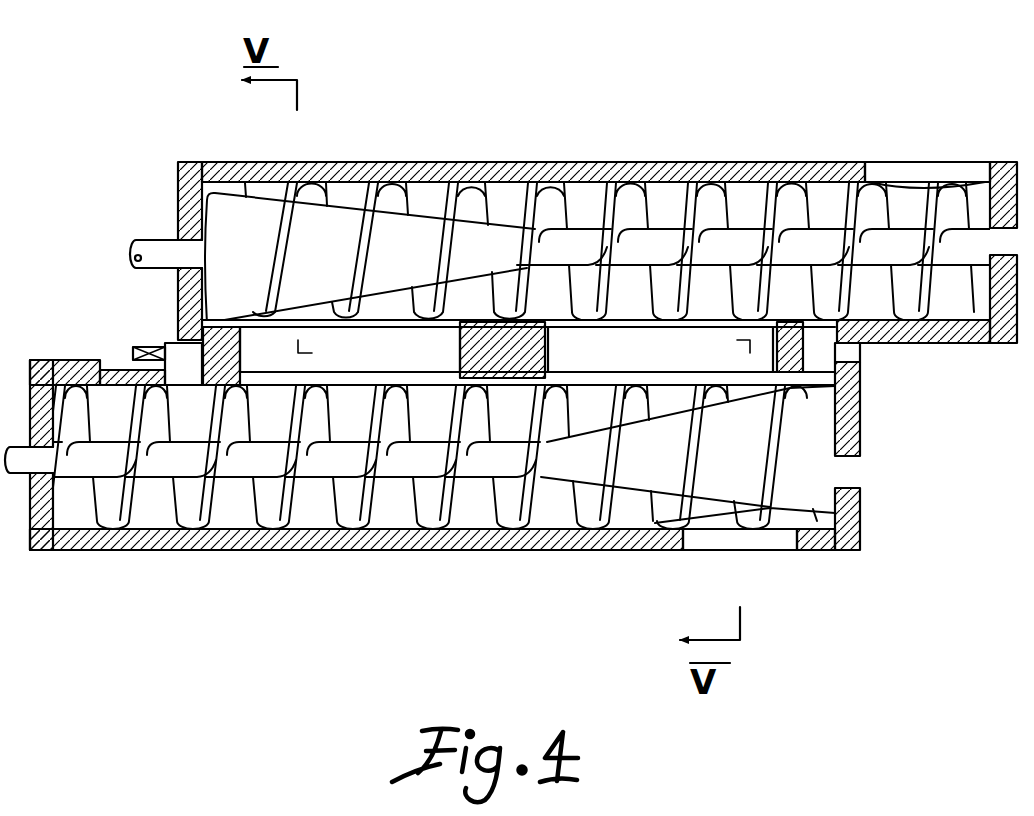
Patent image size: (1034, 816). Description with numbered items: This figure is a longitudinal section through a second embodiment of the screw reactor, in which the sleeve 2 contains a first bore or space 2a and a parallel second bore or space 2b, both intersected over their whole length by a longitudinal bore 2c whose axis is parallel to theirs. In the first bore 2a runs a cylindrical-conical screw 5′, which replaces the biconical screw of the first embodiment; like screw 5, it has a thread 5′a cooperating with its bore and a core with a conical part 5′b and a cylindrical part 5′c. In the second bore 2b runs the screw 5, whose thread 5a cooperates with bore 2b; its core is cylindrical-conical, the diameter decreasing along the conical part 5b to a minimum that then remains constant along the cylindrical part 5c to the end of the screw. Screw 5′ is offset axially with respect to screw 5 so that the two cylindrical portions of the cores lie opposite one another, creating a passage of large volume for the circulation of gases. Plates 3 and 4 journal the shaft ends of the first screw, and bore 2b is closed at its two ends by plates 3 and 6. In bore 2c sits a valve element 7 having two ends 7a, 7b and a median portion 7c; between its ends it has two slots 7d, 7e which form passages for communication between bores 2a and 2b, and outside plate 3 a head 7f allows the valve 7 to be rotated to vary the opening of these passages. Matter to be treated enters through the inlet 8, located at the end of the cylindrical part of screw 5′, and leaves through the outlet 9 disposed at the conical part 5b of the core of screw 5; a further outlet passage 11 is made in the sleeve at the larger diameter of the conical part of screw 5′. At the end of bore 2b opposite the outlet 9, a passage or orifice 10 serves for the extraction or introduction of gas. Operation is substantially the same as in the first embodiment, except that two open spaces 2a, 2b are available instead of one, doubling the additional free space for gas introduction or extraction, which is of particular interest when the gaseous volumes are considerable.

The sleeve 2 is at (297, 540).
The first bore 2a is at (312, 500).
The second bore 2b is at (658, 196).
The longitudinal bore 2c is at (440, 380).
The plate 3 is at (33, 552).
The plate 4 is at (857, 521).
The screw 5 is at (523, 195).
The thread 5a is at (557, 192).
The conical core part 5b is at (413, 222).
The cylindrical core part 5c is at (745, 194).
The cylindrical-conical screw 5′ is at (383, 483).
The screw shaft 5′a is at (200, 502).
The tapered screw core 5′b is at (568, 458).
The helical flight 5′c is at (482, 455).
The plate 6 is at (1005, 345).
The valve element 7 is at (147, 333).
The valve end 7a is at (200, 312).
The valve end 7b is at (862, 352).
The median portion 7c is at (555, 348).
The slot 7d is at (267, 353).
The slot 7e is at (753, 348).
The head 7f is at (133, 353).
The inlet 8 is at (82, 540).
The outlet 9 is at (322, 183).
The passage or orifice 10 is at (893, 168).
The outlet passage 11 is at (720, 529).